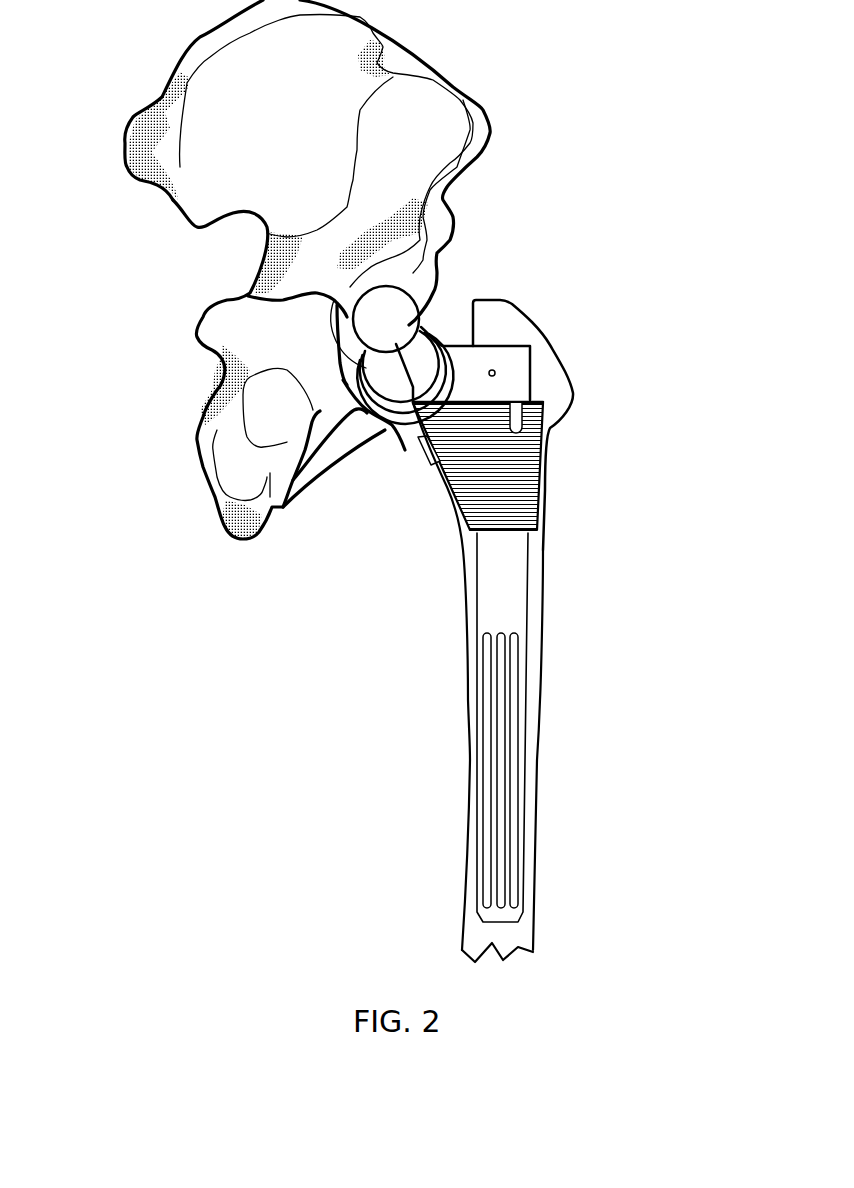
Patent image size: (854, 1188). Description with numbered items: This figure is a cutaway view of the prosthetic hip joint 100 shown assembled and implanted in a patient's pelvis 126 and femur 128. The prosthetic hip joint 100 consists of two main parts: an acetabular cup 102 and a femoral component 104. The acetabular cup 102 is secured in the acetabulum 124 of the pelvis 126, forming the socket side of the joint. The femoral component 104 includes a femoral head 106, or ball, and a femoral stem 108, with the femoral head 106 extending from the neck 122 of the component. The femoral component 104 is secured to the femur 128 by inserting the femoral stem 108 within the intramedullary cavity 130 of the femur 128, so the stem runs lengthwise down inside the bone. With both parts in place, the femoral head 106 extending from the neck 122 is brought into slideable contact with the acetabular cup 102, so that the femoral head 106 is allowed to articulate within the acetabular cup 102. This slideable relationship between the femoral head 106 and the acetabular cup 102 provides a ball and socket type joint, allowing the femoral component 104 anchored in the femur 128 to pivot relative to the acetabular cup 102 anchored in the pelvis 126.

The prosthetic hip joint 100 is at (516, 595).
The acetabular cup 102 is at (264, 269).
The femoral component 104 is at (393, 578).
The femoral head 106 is at (369, 414).
The femoral stem 108 is at (487, 727).
The neck 122 is at (441, 340).
The acetabulum 124 is at (445, 278).
The pelvis 126 is at (148, 108).
The femur 128 is at (540, 705).
The intramedullary cavity 130 is at (520, 627).